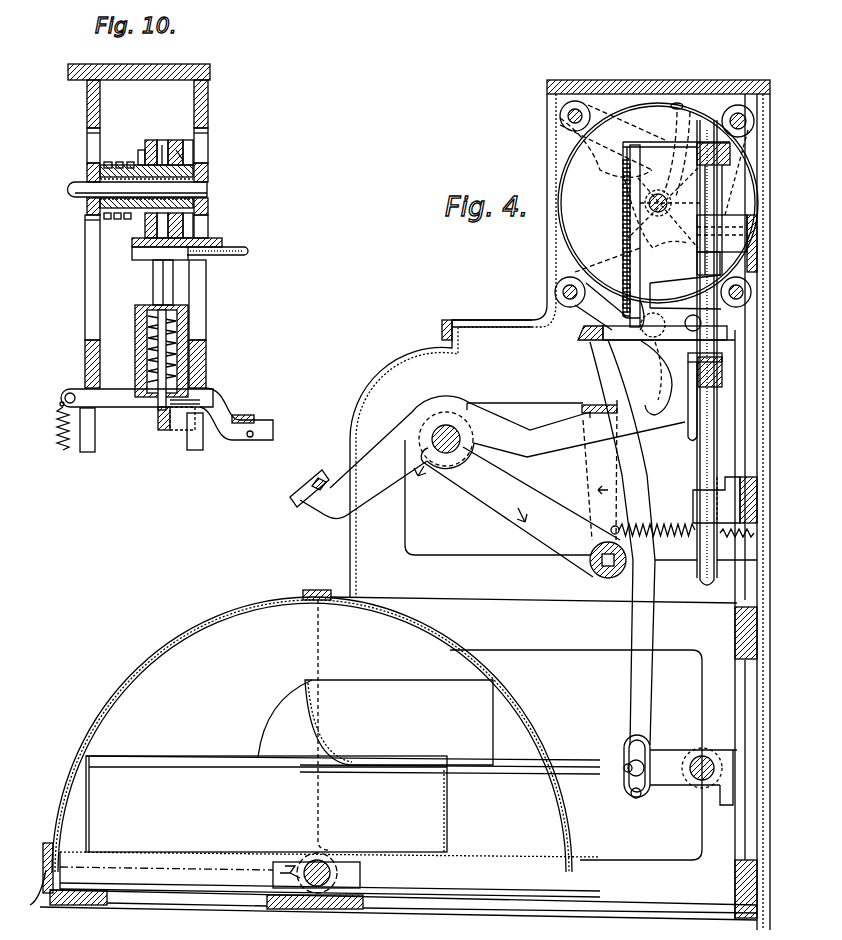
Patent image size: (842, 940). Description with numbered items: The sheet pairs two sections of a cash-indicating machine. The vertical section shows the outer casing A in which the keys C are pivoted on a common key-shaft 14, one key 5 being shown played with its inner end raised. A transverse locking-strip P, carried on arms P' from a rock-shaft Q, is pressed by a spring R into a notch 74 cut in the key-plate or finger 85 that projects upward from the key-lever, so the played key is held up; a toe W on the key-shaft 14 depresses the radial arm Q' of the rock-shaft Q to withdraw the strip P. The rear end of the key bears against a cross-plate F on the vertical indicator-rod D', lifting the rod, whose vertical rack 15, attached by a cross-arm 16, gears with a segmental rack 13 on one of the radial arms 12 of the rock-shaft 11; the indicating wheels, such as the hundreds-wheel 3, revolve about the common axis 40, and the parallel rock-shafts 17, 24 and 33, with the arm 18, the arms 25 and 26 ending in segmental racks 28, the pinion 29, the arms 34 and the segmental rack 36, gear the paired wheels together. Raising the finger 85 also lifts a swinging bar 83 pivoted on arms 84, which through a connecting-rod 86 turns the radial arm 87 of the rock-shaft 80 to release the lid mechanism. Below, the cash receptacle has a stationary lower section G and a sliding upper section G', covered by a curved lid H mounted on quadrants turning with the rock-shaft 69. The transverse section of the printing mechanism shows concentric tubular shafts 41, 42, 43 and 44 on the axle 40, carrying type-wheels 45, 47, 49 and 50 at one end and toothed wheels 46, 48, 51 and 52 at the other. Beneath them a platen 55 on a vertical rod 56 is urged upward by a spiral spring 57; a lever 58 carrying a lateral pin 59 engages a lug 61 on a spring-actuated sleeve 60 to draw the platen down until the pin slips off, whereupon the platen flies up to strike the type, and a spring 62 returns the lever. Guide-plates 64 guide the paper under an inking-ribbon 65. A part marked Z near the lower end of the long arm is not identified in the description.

In FIG. 4, the hundreds-wheel 3 is at (560, 197).
In FIG. 4, the key 5 is at (358, 465).
In FIG. 4, the rock-shaft 11 is at (752, 292).
In FIG. 4, the radial arms 12 is at (685, 292).
In FIG. 4, the segmental racks 13 is at (643, 294).
In FIG. 4, the key-shaft 14 is at (446, 433).
In FIG. 4, the vertical rack 15 is at (630, 240).
In FIG. 4, the cross-arm 16 is at (690, 148).
In FIG. 4, the rock-shaft 17 is at (755, 120).
In FIG. 4, the radial arm 18 is at (740, 178).
In FIG. 4, the rock-shaft 24 is at (555, 292).
In FIG. 4, the radial arm 25 is at (582, 278).
In FIG. 4, the radial arm 26 is at (600, 306).
In FIG. 4, the segmental rack 28 is at (648, 345).
In FIG. 4, the pinion 29 is at (646, 209).
In FIG. 4, the rock-shaft 33 is at (568, 116).
In FIG. 4, the radial arms 34 is at (603, 122).
In FIG. 4, the segmental rack 36 is at (683, 106).
In FIG. 10, the central axle 40 is at (200, 186).
In FIG. 4, the central axle 40 is at (648, 201).
In FIG. 10, the innermost tubular shaft 41 is at (195, 175).
In FIG. 10, the tubular shaft 42 is at (185, 165).
In FIG. 10, the tubular shaft 43 is at (186, 155).
In FIG. 10, the tubular shaft 44 is at (188, 142).
In FIG. 10, the type-wheel 45 is at (178, 140).
In FIG. 10, the toothed wheel 46 is at (111, 154).
In FIG. 10, the type-wheel 47 is at (163, 146).
In FIG. 10, the toothed wheel 48 is at (110, 219).
In FIG. 10, the type-wheel 49 is at (151, 140).
In FIG. 10, the type-wheel 50 is at (145, 148).
In FIG. 10, the toothed wheel 51 is at (127, 156).
In FIG. 10, the toothed wheel 52 is at (146, 218).
In FIG. 10, the platen 55 is at (138, 260).
In FIG. 10, the platen-rod 56 is at (160, 405).
In FIG. 10, the spiral spring 57 is at (140, 350).
In FIG. 10, the lever 58 is at (240, 438).
In FIG. 10, the lateral pin 59 is at (189, 400).
In FIG. 10, the sleeve 60 is at (182, 430).
In FIG. 10, the lug 61 is at (165, 430).
In FIG. 10, the spring 62 is at (60, 425).
In FIG. 10, the guide-plates 64 is at (216, 247).
In FIG. 10, the inking-ribbon 65 is at (200, 238).
In FIG. 4, the rock-shaft 69 is at (326, 866).
In FIG. 4, the notch 74 is at (617, 409).
In FIG. 4, the rock-shaft 80 is at (698, 758).
In FIG. 4, the swinging bar 83 is at (583, 341).
In FIG. 4, the arms 84 is at (669, 326).
In FIG. 4, the key-plate 85 is at (640, 372).
In FIG. 4, the connecting-rod 86 is at (653, 518).
In FIG. 4, the radial arm 87 is at (680, 770).
In FIG. 4, the outer casing A is at (351, 412).
In FIG. 4, the keys C is at (548, 432).
In FIG. 4, the vertical rod D' is at (716, 352).
In FIG. 4, the cross-plate F is at (689, 396).
In FIG. 4, the cash receptacle G is at (343, 804).
In FIG. 4, the upper section G' is at (375, 725).
In FIG. 4, the curved lid H is at (141, 672).
In FIG. 4, the locking-strip P is at (529, 396).
In FIG. 4, the arms P' is at (619, 543).
In FIG. 4, the rock-shaft Q is at (600, 567).
In FIG. 4, the arm Q' is at (520, 512).
In FIG. 4, the spring R is at (709, 507).
In FIG. 4, the toe W is at (431, 439).
In FIG. 4, the pin Z is at (622, 762).